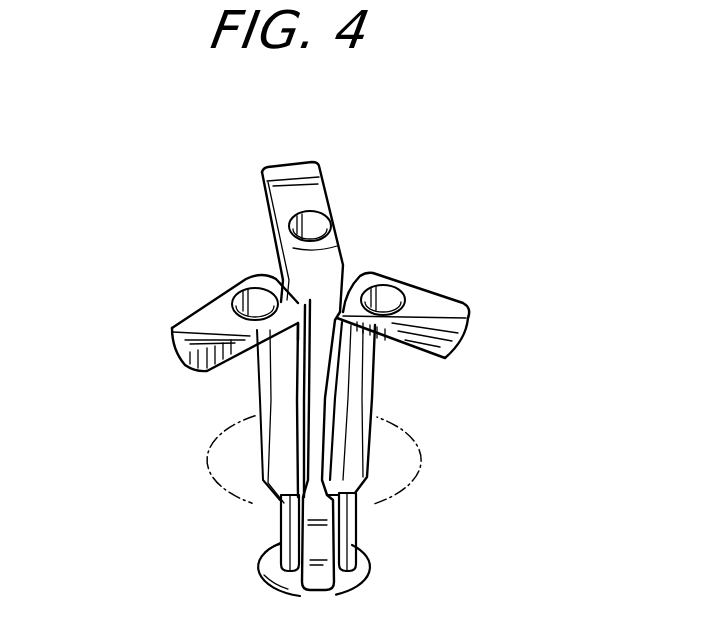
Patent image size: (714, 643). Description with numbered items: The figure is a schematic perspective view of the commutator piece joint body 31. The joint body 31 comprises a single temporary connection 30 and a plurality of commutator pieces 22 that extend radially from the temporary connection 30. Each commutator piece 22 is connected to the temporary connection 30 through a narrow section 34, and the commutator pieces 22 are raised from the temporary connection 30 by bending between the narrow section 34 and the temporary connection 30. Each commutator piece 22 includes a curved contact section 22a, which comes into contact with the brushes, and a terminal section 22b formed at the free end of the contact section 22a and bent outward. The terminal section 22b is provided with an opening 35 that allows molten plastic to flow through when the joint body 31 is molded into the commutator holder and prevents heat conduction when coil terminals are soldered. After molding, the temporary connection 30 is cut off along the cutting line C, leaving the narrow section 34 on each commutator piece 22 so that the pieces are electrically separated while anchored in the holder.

The commutator piece joint body 31 is at (369, 217).
The commutator piece 22 is at (85, 253).
The contact section 22a is at (275, 388).
The terminal section 22b is at (279, 172).
The opening 35 is at (290, 224).
The narrow section 34 is at (280, 535).
The temporary connection 30 is at (316, 586).
The cutting line C is at (412, 480).